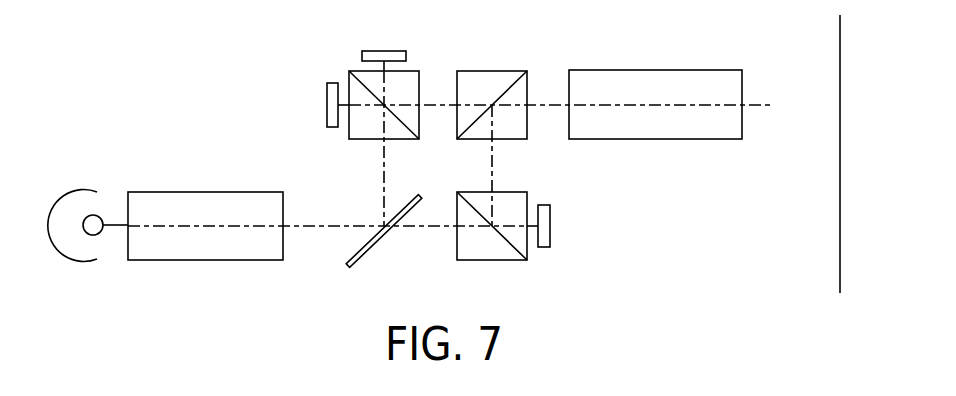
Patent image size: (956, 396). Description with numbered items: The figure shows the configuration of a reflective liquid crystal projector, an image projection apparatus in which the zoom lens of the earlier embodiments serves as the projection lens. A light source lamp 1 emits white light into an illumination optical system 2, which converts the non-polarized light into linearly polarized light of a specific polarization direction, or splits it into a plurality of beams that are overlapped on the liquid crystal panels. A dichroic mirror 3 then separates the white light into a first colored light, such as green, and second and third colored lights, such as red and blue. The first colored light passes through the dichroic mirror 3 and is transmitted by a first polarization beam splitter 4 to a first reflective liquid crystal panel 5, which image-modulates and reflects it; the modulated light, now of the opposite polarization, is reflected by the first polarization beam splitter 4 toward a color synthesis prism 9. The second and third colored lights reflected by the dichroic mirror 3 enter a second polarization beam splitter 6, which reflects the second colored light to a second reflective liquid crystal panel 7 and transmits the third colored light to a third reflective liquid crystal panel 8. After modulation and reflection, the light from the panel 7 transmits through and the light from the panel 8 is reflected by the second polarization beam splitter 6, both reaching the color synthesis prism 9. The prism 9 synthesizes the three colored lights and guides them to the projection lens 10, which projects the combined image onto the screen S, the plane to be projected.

The light source lamp 1 is at (76, 256).
The illumination optical system 2 is at (228, 260).
The dichroic mirror 3 is at (366, 250).
The first polarization beam splitter 4 is at (498, 260).
The first reflective liquid crystal panel 5 is at (551, 219).
The second polarization beam splitter 6 is at (357, 71).
The second reflective liquid crystal panel 7 is at (327, 96).
The third reflective liquid crystal panel 8 is at (373, 51).
The color synthesis prism 9 is at (477, 71).
The projection lens 10 is at (597, 70).
The sample surface S is at (840, 63).